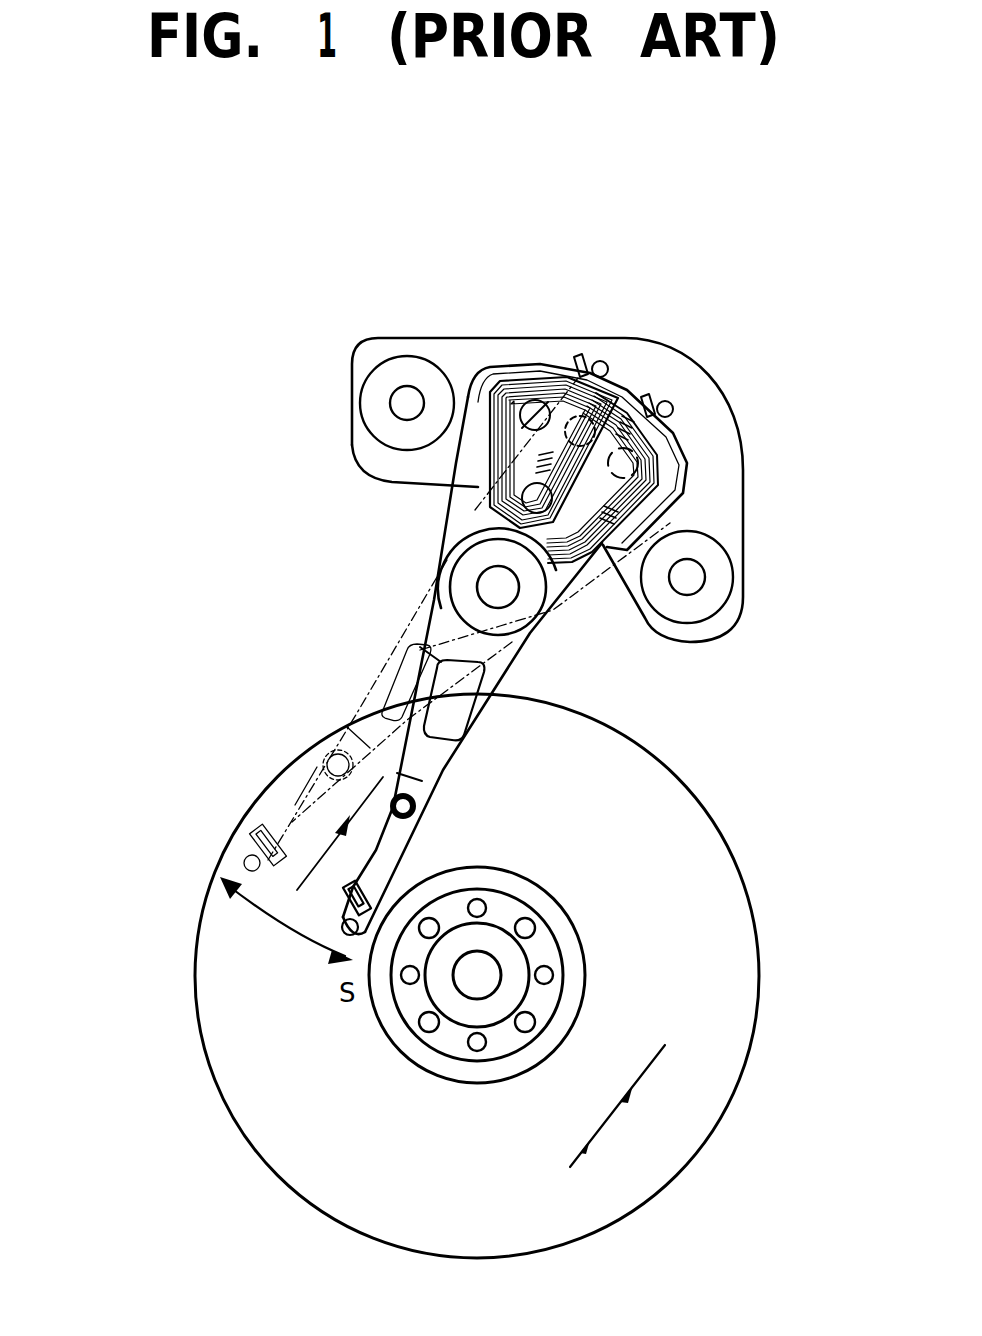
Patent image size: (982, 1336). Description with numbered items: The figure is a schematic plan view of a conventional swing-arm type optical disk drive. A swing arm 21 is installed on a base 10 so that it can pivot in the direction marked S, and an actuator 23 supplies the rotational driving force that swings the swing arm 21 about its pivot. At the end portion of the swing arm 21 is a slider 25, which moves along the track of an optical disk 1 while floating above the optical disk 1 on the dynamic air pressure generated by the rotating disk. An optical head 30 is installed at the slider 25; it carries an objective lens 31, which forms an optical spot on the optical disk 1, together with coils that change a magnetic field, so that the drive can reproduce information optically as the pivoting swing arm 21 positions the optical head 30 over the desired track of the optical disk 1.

The optical disk 1 is at (685, 975).
The base 10 is at (292, 627).
The swing arm 21 is at (520, 655).
The actuator 23 is at (723, 483).
The slider 25 is at (383, 897).
The optical head 30 is at (333, 908).
The objective lens 31 is at (343, 930).